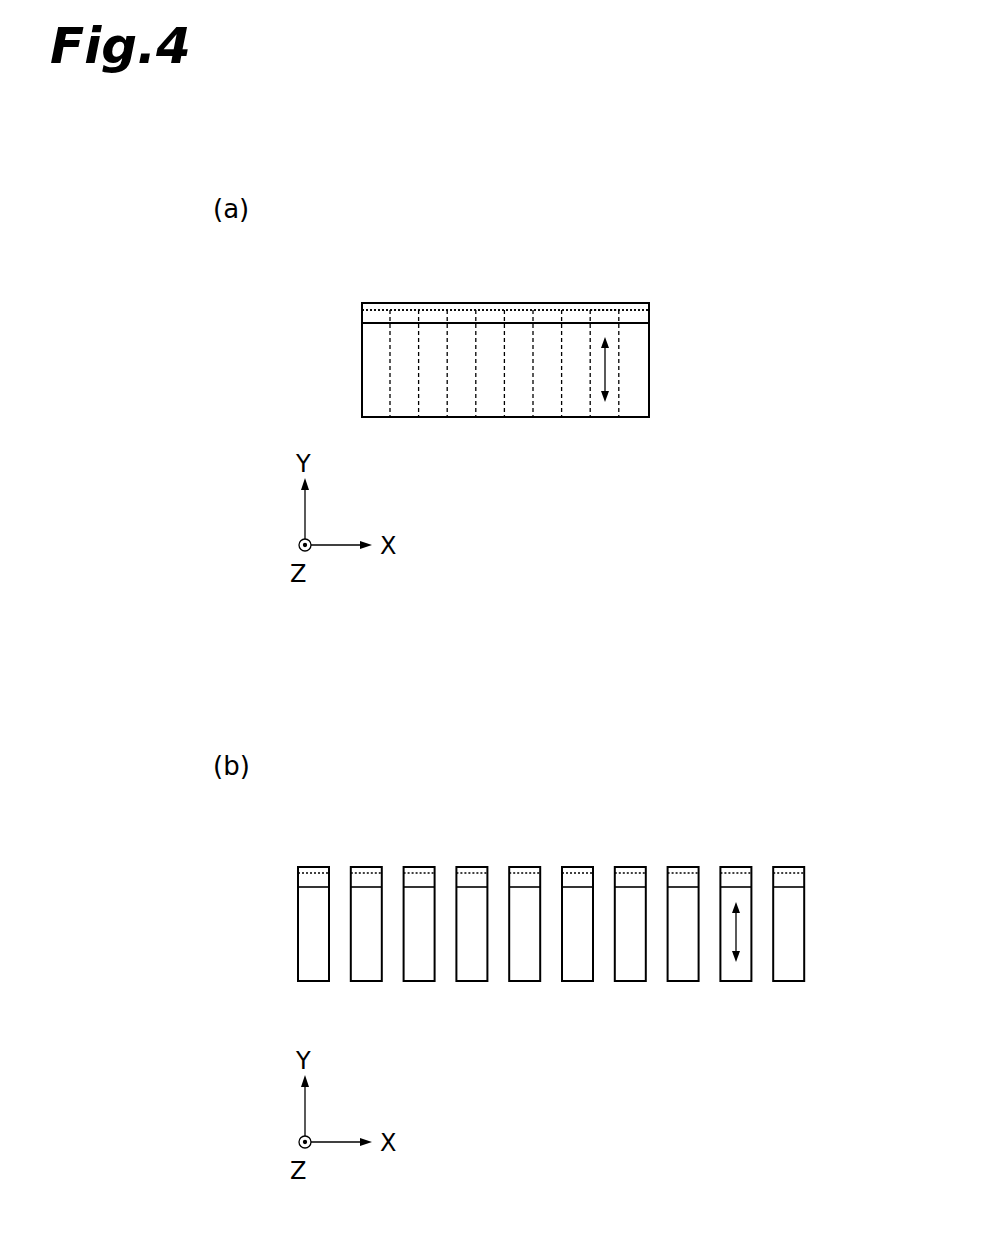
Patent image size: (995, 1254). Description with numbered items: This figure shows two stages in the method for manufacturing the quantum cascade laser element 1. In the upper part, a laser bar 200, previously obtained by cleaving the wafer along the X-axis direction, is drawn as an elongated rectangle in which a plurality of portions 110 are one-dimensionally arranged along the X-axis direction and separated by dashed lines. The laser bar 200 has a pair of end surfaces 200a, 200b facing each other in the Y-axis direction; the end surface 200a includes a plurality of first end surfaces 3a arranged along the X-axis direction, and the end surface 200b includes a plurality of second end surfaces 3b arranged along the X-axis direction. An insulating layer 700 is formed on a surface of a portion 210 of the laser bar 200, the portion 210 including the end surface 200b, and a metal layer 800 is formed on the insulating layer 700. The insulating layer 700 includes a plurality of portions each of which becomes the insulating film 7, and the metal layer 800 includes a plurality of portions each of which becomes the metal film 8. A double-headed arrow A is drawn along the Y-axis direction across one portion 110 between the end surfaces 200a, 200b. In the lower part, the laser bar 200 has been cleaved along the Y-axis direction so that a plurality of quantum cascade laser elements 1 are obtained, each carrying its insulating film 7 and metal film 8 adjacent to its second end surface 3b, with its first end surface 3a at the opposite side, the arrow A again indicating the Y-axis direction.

The quantum cascade laser element 1 is at (362, 856).
The insulating film 7 is at (522, 875).
The metal film 8 is at (528, 867).
The first end surface 3a is at (605, 417).
The second end surface 3b is at (607, 307).
The portion 110 is at (462, 358).
The laser bar 200 is at (649, 332).
The end surface 200a is at (492, 417).
The end surface 200b is at (535, 305).
The portion 210 is at (365, 313).
The insulating layer 700 is at (404, 310).
The metal layer 800 is at (438, 305).
The thickness direction A is at (607, 367).